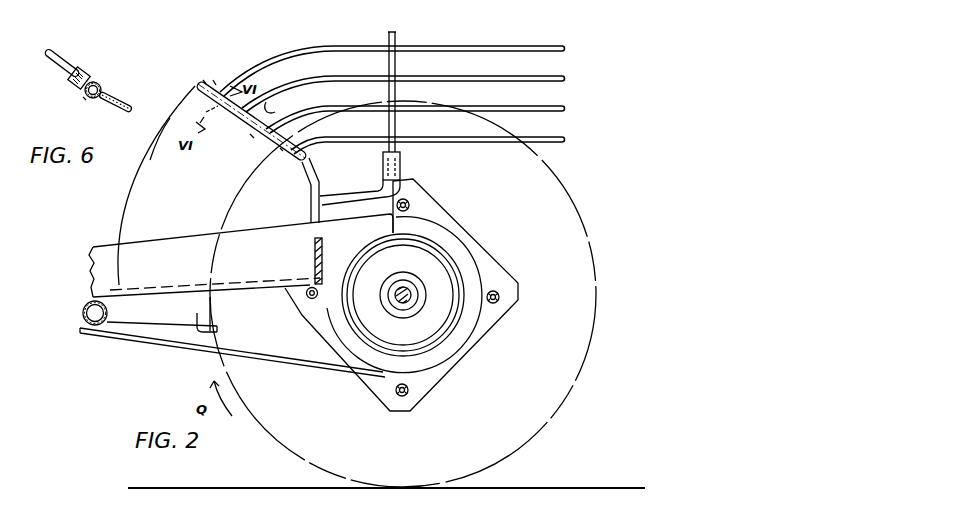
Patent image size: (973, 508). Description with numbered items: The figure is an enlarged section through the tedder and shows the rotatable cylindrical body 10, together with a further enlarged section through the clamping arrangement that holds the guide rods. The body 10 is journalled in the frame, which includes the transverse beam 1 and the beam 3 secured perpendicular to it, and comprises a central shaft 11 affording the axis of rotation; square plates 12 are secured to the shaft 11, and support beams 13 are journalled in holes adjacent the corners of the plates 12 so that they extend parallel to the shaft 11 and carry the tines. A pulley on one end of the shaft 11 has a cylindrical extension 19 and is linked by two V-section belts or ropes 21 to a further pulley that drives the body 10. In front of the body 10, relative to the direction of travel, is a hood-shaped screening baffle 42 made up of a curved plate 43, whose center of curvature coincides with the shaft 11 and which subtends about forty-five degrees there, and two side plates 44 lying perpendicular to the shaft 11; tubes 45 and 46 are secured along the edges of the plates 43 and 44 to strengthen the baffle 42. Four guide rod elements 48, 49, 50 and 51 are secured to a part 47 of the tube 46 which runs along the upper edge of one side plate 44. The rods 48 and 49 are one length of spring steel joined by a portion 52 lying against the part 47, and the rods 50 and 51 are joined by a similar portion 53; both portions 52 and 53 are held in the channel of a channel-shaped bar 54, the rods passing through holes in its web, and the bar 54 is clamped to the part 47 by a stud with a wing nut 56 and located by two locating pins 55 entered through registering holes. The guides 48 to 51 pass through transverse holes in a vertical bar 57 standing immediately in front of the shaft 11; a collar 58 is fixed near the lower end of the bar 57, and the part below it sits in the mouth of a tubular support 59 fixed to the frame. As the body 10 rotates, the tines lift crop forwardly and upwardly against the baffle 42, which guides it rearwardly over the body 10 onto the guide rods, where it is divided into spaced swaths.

In FIG. 2, the beam 1 is at (90, 314).
In FIG. 2, the beam 3 is at (214, 317).
In FIG. 2, the cylindrical body 10 is at (624, 223).
In FIG. 2, the central shaft 11 is at (410, 295).
In FIG. 2, the square plate 12 is at (489, 268).
In FIG. 2, the support beam 13 is at (501, 294).
In FIG. 2, the cylindrical extension 19 is at (439, 323).
In FIG. 2, the V-section belts or ropes 21 is at (305, 362).
In FIG. 2, the hood-shaped screening baffle 42 is at (128, 218).
In FIG. 2, the curved plate 43 is at (136, 186).
In FIG. 2, the side plate 44 is at (159, 148).
In FIG. 6, the side plate 44 is at (118, 100).
In FIG. 2, the tube 45 is at (202, 283).
In FIG. 2, the tube 46 is at (196, 87).
In FIG. 2, the part of the tube 47 is at (252, 137).
In FIG. 6, the part of the tube 47 is at (84, 98).
In FIG. 2, the guide rod element 48 is at (345, 47).
In FIG. 6, the guide rod element 48 is at (72, 60).
In FIG. 2, the guide rod element 49 is at (335, 78).
In FIG. 2, the guide rod element 50 is at (350, 108).
In FIG. 2, the guide rod element 51 is at (366, 138).
In FIG. 2, the portion 52 is at (202, 115).
In FIG. 6, the portion 52 is at (90, 80).
In FIG. 2, the portion 53 is at (281, 150).
In FIG. 2, the channel-shaped bar 54 is at (206, 80).
In FIG. 6, the channel-shaped bar 54 is at (68, 78).
In FIG. 2, the locating pin 55 is at (214, 80).
In FIG. 2, the wing nut 56 is at (266, 116).
In FIG. 2, the vertical bar 57 is at (397, 34).
In FIG. 2, the collar 58 is at (381, 158).
In FIG. 2, the tubular support 59 is at (401, 168).